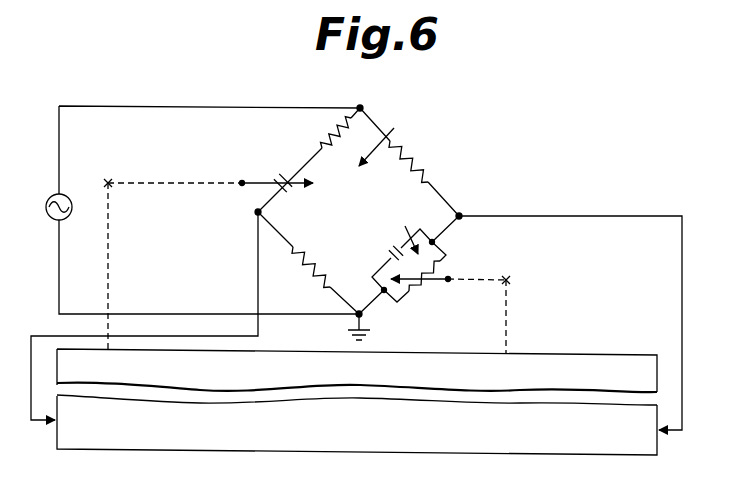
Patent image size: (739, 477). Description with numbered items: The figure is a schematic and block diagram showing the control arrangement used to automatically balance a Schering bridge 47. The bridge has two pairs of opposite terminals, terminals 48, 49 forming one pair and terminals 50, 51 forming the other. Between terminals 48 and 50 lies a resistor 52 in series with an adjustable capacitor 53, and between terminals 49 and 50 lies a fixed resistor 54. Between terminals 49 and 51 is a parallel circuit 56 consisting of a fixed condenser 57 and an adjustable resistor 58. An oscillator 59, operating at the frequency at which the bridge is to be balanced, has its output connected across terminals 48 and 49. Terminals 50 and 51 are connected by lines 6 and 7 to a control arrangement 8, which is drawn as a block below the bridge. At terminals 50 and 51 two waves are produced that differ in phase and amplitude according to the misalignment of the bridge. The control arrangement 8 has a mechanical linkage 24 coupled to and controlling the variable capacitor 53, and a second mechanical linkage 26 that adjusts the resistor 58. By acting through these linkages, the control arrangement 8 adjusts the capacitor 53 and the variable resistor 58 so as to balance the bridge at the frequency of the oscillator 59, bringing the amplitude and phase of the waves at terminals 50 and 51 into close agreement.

The line 6 is at (31, 386).
The line 7 is at (683, 334).
The control arrangement 8 is at (666, 389).
The mechanical linkage 24 is at (108, 266).
The mechanical linkage 26 is at (506, 334).
The Schering bridge 47 is at (385, 139).
The terminal 48 is at (375, 100).
The terminal 49 is at (363, 316).
The terminal 50 is at (255, 212).
The terminal 51 is at (461, 215).
The resistor 52 is at (330, 130).
The adjustable capacitor 53 is at (289, 190).
The fixed resistor 54 is at (312, 264).
The parallel circuit 56 is at (406, 230).
The fixed condenser 57 is at (391, 248).
The adjustable resistor 58 is at (416, 283).
The oscillator 59 is at (70, 197).